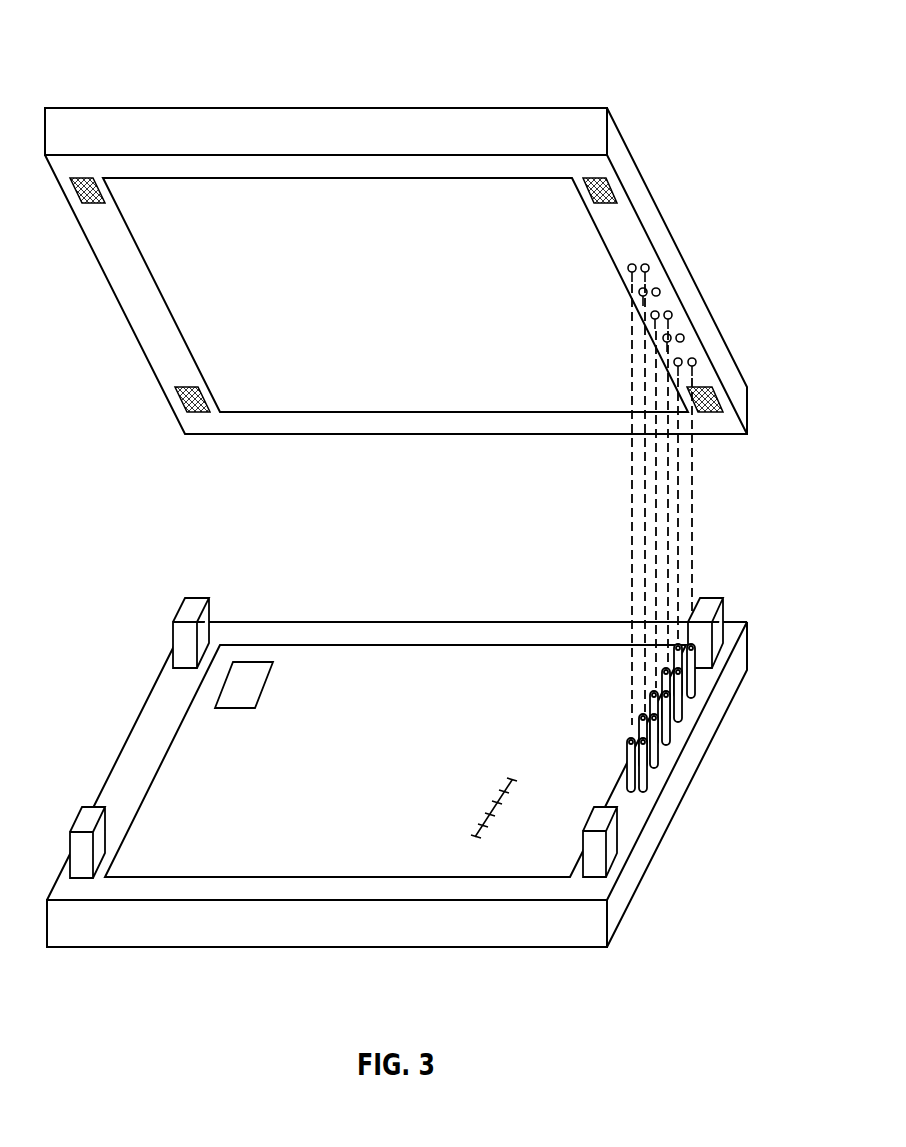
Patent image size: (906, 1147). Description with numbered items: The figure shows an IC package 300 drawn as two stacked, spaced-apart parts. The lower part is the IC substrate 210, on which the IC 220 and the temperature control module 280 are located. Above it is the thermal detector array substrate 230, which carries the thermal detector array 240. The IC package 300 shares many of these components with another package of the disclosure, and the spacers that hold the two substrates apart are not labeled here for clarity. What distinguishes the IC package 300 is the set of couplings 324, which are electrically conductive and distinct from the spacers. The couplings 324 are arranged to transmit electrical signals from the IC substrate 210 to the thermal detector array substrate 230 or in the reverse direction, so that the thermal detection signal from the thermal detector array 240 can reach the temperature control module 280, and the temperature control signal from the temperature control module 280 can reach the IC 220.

The IC package 300 is at (416, 483).
The thermal detector array substrate 230 is at (403, 271).
The thermal detector array 240 is at (395, 295).
The IC 220 is at (395, 761).
The IC substrate 210 is at (417, 772).
The temperature control module 280 is at (255, 708).
The couplings 324 is at (688, 705).